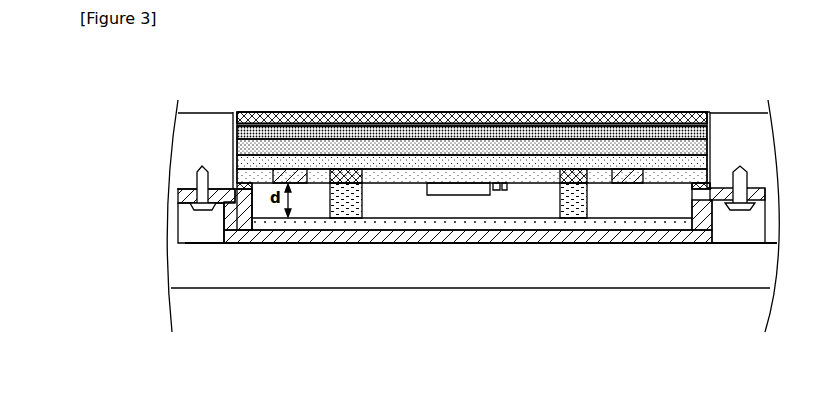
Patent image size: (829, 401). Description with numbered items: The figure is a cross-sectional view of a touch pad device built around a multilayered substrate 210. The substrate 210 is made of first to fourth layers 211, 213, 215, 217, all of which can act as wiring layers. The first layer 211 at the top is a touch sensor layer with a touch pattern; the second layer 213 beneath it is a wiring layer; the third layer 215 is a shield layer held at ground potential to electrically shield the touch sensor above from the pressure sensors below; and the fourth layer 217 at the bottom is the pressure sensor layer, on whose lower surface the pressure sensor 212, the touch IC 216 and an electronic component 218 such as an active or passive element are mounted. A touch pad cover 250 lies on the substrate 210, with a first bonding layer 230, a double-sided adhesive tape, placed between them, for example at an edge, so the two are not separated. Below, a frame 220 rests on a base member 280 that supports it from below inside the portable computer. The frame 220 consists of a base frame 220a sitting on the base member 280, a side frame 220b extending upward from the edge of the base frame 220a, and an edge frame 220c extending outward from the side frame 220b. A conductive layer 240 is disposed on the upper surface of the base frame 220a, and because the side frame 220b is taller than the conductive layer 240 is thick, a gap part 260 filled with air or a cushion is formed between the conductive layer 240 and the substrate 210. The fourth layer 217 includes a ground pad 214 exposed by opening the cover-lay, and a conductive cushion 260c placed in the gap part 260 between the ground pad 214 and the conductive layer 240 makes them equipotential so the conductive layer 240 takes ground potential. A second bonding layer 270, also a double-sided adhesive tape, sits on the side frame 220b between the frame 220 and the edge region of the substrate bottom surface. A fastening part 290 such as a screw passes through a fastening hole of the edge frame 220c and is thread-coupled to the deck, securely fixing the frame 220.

The substrate 210 is at (136, 128).
The first layer 211 is at (233, 129).
The pressure sensor 212 is at (291, 184).
The second layer 213 is at (233, 147).
The ground pad 214 is at (375, 182).
The third layer 215 is at (233, 162).
The touch IC 216 is at (453, 196).
The fourth layer 217 is at (233, 178).
The electronic component 218 is at (497, 191).
The frame 220 is at (237, 340).
The base frame 220a is at (313, 233).
The side frame 220b is at (238, 234).
The edge frame 220c is at (221, 205).
The first bonding layer 230 is at (455, 112).
The conductive layer 240 is at (606, 226).
The touch pad cover 250 is at (390, 112).
The gap part 260 is at (546, 213).
The conductive cushion 260c is at (355, 210).
The second bonding layer 270 is at (692, 187).
The base member 280 is at (714, 262).
The fastening part 290 is at (197, 204).